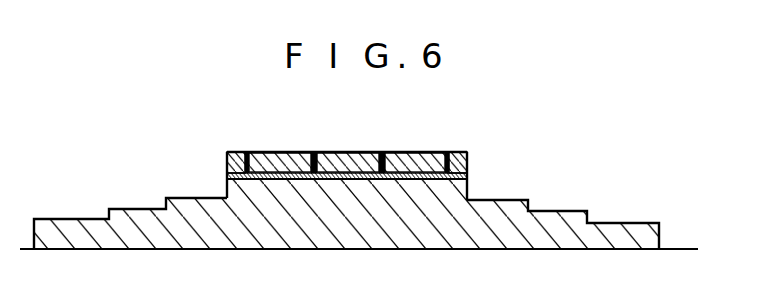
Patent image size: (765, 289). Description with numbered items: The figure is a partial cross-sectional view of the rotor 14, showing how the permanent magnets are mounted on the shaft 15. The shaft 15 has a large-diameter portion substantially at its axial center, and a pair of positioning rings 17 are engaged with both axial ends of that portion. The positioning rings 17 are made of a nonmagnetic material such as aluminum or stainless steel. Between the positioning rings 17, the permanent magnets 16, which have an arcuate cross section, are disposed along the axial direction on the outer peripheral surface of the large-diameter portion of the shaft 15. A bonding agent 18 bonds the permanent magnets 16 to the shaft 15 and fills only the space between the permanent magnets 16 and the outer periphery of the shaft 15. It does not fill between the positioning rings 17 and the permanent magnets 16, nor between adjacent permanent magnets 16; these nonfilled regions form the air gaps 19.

The rotor 14 is at (153, 186).
The shaft 15 is at (457, 186).
The permanent magnets 16 is at (278, 153).
The positioning rings 17 is at (240, 153).
The bonding agent 18 is at (262, 177).
The air gaps 19 is at (249, 152).